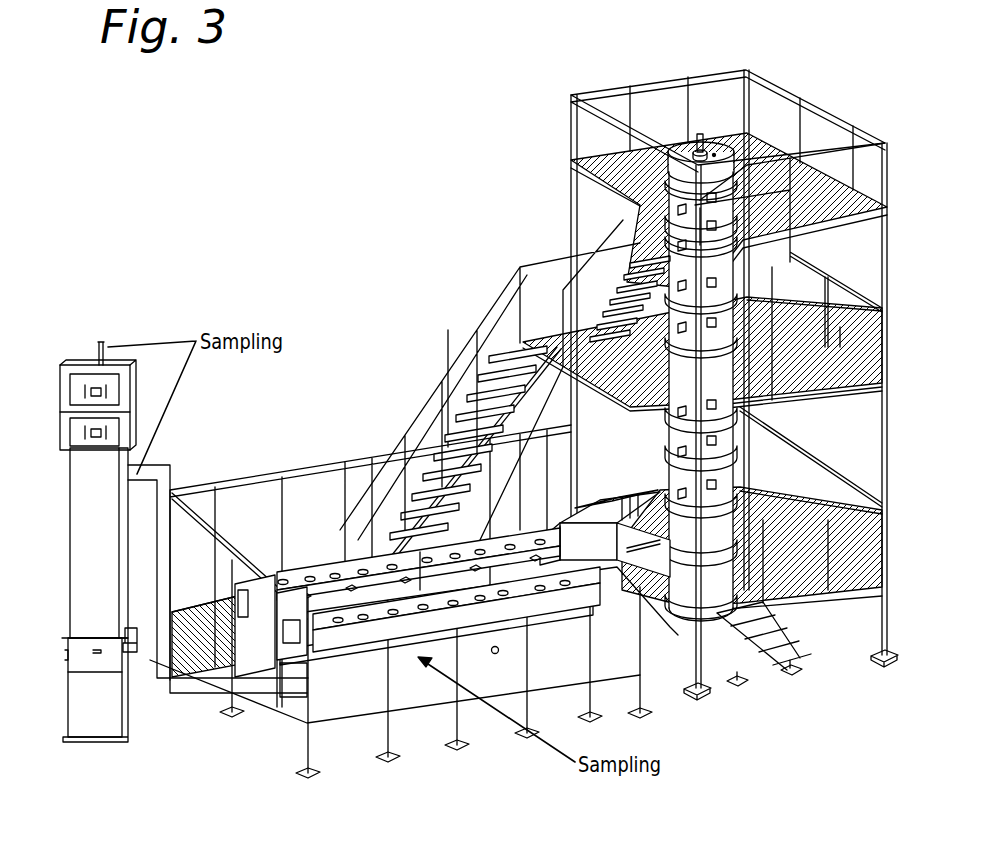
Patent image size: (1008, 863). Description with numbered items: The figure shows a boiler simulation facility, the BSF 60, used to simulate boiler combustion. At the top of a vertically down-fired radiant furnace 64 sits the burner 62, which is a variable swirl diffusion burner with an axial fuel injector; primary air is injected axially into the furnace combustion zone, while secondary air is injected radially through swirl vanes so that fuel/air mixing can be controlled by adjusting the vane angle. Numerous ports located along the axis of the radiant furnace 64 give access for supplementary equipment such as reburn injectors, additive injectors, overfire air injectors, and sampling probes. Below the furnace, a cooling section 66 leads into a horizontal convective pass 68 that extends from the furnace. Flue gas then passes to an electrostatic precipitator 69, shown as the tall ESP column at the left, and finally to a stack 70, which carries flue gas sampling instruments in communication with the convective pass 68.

The boiler simulation facility (BSF) 60 is at (262, 207).
The burner 62 is at (700, 158).
The radiant furnace 64 is at (672, 318).
The cooling section 66 is at (611, 483).
The convective pass 68 is at (348, 572).
The electrostatic precipitator (ESP) 69 is at (88, 553).
The stack 70 is at (56, 396).